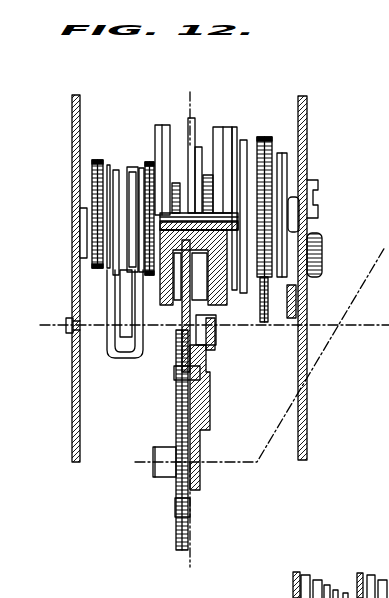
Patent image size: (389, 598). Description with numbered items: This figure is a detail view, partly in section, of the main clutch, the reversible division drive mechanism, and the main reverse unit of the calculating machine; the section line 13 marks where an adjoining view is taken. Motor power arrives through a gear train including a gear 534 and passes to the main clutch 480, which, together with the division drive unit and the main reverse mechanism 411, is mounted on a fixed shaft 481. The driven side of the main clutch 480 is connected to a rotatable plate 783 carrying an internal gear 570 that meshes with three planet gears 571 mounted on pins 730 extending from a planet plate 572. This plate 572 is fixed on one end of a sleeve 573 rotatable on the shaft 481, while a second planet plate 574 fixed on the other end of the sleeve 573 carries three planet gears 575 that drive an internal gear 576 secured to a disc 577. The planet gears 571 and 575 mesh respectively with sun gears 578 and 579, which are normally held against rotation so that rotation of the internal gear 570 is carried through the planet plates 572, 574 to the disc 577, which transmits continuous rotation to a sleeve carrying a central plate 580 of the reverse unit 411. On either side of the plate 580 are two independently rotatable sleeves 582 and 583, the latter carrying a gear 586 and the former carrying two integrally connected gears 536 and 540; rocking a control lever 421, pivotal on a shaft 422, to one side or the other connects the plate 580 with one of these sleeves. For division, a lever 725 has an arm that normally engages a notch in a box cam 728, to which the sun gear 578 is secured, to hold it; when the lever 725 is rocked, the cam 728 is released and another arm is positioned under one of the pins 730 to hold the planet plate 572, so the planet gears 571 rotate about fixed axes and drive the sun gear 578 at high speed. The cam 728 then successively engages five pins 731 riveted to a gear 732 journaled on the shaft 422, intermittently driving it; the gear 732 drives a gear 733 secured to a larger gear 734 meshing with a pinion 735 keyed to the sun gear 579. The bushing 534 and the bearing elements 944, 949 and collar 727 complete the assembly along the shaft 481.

The section line 13- 13 is at (190, 94).
The main reverse mechanism 411 is at (116, 205).
The control lever 421 is at (106, 352).
The shaft 422 is at (70, 334).
The main clutch 480 is at (326, 278).
The fixed shaft 481 is at (80, 216).
The gear 534 is at (294, 305).
The gear 536 is at (93, 172).
The gear 540 is at (64, 196).
The internal gear 570 is at (240, 136).
The planet gears 571 is at (235, 258).
The planet plate 572 is at (266, 322).
The sleeve 573 is at (165, 322).
The second planet plate 574 is at (126, 267).
The planet gears 575 is at (162, 282).
The internal gear 576 is at (155, 132).
The disc 577 is at (145, 163).
The sun gear 578 is at (214, 128).
The sun gear 579 is at (126, 267).
The central plate 580 is at (140, 168).
The sleeve 582 is at (108, 198).
The sleeve 583 is at (132, 220).
The gear 586 is at (82, 181).
The lever 725 is at (214, 347).
The collar 727 is at (233, 342).
The box cam 728 is at (194, 118).
The pins 730 is at (196, 292).
The pins 731 is at (206, 384).
The gear 732 is at (176, 369).
The gear 733 is at (190, 504).
The larger gear 734 is at (175, 421).
The pinion 735 is at (166, 136).
The rotatable plate 783 is at (253, 136).
The wall 944 is at (297, 320).
The toothed member 949 is at (289, 257).